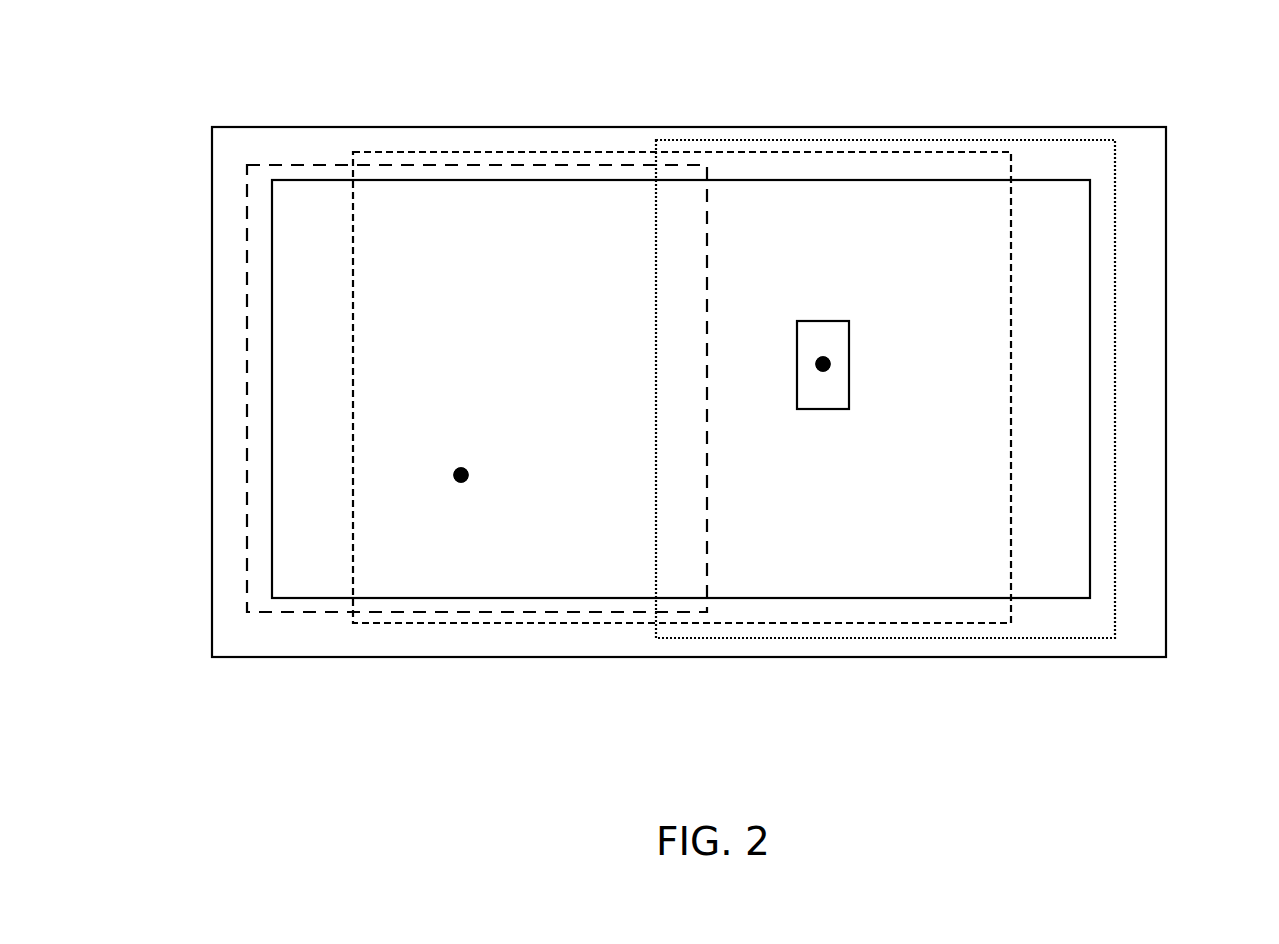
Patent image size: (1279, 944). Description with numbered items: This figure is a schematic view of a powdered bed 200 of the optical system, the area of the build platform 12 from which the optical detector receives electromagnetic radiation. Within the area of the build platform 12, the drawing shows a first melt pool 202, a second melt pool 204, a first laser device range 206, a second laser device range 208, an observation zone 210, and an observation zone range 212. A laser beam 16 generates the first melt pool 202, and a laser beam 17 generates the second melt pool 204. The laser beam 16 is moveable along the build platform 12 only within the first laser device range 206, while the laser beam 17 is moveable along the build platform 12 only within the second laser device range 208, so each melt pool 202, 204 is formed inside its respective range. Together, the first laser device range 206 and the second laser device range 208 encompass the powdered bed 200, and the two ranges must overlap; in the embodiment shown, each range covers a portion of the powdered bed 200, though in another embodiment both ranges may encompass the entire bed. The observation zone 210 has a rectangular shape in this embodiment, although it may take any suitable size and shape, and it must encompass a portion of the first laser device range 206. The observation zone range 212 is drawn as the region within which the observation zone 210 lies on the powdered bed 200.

The build platform 12 is at (783, 657).
The laser beam 16 is at (823, 364).
The laser beam 17 is at (461, 475).
The powdered bed 200 is at (430, 598).
The first melt pool 202 is at (823, 357).
The second melt pool 204 is at (461, 475).
The first laser device range 206 is at (885, 638).
The second laser device range 208 is at (562, 612).
The observation zone 210 is at (808, 321).
The observation zone range 212 is at (682, 623).